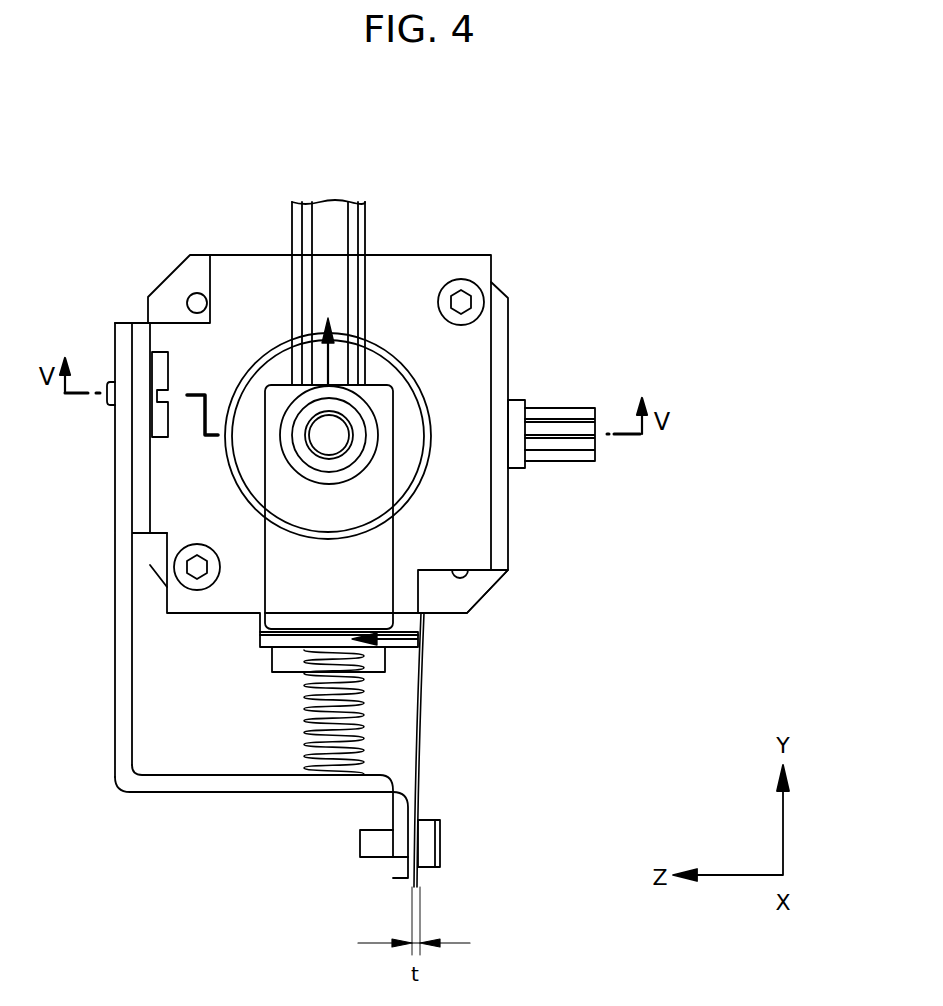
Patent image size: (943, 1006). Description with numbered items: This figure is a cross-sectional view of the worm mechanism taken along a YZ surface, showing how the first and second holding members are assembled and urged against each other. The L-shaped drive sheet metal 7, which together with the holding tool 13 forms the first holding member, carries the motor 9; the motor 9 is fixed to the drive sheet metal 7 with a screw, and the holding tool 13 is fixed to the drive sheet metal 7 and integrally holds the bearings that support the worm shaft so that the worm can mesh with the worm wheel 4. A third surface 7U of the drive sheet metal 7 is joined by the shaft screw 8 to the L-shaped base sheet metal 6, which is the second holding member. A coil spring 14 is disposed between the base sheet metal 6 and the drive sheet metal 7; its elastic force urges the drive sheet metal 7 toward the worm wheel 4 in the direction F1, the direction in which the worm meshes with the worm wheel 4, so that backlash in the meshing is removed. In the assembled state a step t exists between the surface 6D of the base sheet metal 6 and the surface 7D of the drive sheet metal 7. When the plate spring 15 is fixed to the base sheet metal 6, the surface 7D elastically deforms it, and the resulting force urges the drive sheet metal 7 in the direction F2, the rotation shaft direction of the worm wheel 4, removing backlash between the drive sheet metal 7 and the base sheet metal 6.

The worm wheel 4 is at (328, 218).
The L-shaped drive sheet metal 7 is at (432, 268).
The third surface 7U is at (140, 488).
The surface 7D is at (420, 590).
The shaft screw 8 is at (161, 373).
The motor 9 is at (500, 547).
The holding tool 13 is at (297, 617).
The spring 14 is at (299, 755).
The plate spring 15 is at (420, 768).
The L-shaped base sheet metal 6 is at (128, 782).
The surface 6D is at (392, 862).
The direction F1 is at (330, 355).
The direction F2 is at (404, 645).